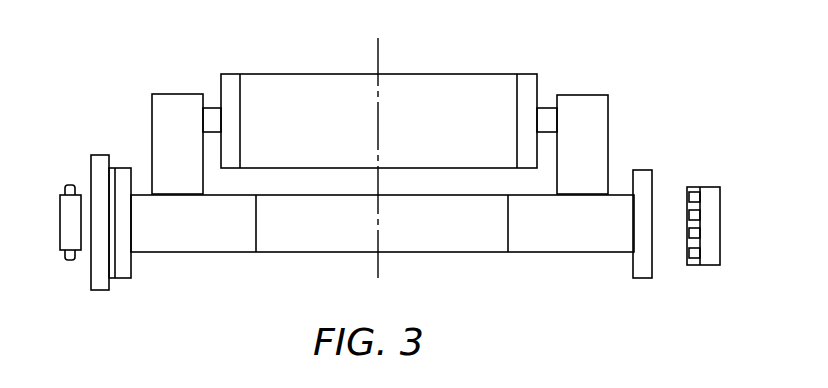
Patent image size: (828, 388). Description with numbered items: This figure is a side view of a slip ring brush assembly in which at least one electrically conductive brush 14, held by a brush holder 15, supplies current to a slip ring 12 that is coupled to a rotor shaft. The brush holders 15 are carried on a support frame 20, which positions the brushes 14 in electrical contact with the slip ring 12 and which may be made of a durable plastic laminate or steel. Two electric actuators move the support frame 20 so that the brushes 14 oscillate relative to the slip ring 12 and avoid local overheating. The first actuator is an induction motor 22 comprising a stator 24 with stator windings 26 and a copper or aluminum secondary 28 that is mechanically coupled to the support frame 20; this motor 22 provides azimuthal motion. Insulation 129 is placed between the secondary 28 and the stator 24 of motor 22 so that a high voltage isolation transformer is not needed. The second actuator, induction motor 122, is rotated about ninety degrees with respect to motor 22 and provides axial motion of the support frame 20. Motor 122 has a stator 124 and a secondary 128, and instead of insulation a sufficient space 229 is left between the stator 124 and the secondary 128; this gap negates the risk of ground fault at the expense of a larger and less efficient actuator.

The slip ring 12 is at (233, 90).
The electrically conductive brush 14 is at (212, 117).
The brush holder 15 is at (180, 113).
The support frame 20 is at (200, 232).
The induction motor 22 is at (93, 302).
The stator 24 is at (58, 227).
The stator windings 26 is at (65, 188).
The secondary 28 is at (120, 175).
The secondary 128 is at (650, 168).
The insulation 129 is at (98, 160).
The induction motor 122 is at (685, 281).
The stator 124 is at (721, 248).
The space 229 is at (671, 204).